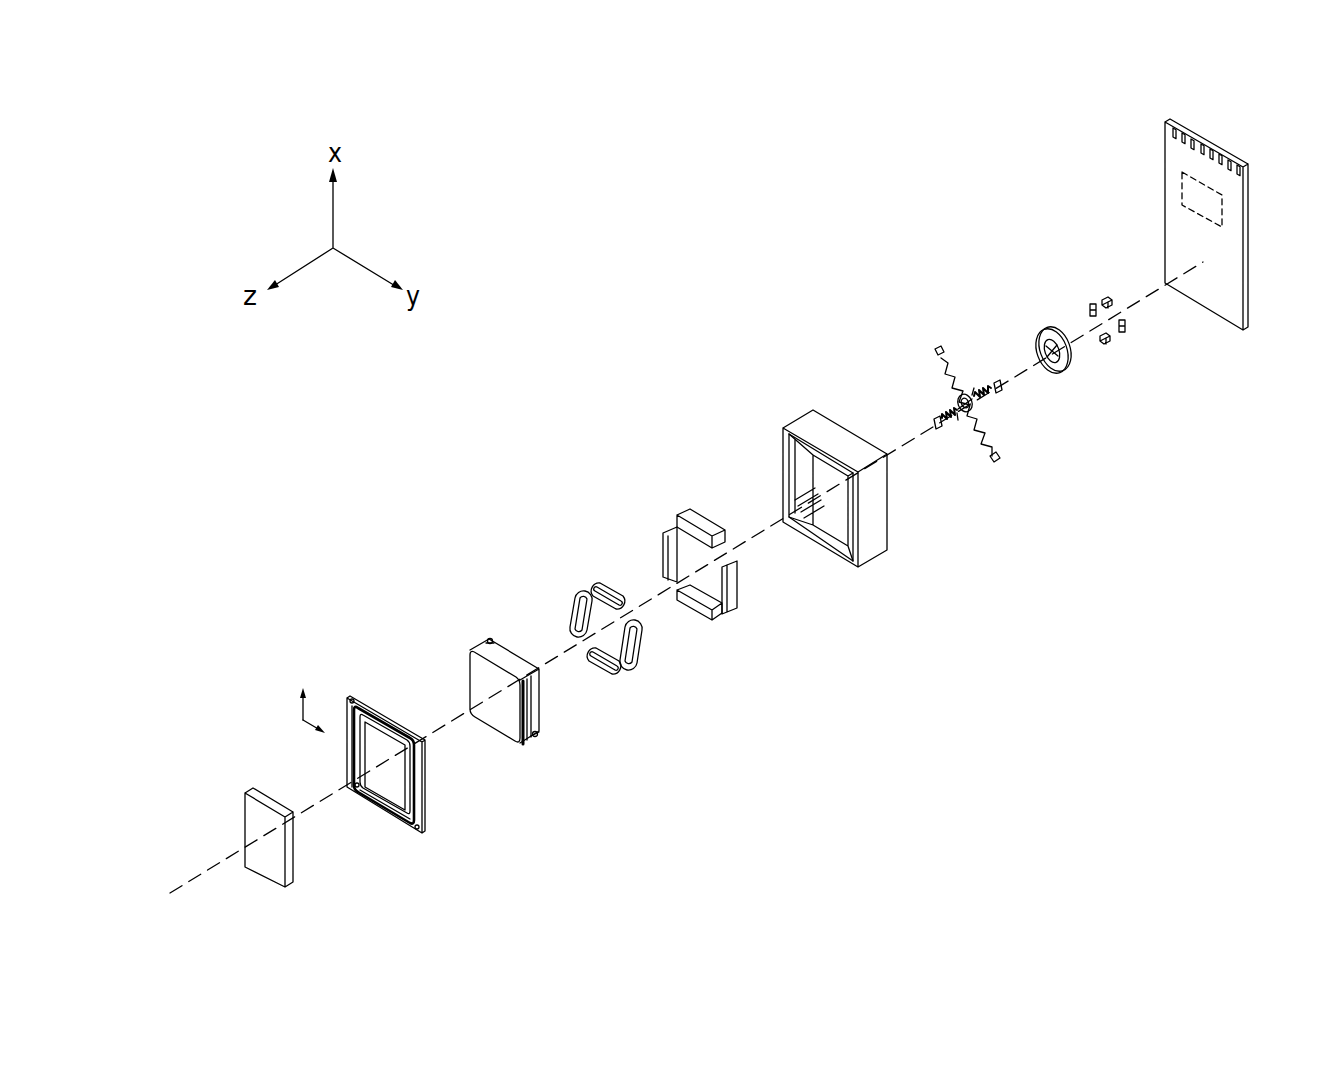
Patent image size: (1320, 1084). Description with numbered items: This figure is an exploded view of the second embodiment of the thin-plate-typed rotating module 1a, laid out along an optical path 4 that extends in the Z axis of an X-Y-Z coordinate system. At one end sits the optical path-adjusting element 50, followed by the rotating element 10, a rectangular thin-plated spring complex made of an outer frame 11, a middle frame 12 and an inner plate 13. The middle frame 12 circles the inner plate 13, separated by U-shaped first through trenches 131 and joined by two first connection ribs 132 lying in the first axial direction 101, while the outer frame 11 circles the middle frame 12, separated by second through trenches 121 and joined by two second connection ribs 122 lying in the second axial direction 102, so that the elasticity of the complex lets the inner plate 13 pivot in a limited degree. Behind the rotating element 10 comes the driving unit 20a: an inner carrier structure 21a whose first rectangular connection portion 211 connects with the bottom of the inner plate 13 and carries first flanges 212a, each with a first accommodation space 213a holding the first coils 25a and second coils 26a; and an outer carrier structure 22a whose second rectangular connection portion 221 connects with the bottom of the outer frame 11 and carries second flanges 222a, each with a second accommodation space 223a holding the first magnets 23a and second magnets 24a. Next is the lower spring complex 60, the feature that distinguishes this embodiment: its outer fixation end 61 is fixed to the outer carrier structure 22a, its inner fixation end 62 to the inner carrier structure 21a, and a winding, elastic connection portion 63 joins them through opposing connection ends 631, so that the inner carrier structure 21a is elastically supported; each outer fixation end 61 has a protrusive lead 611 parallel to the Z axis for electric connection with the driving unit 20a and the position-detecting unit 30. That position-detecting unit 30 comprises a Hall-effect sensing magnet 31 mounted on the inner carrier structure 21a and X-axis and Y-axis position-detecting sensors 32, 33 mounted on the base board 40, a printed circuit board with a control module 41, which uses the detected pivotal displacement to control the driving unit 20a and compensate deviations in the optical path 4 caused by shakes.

The thin-plate-typed rotating module 1a is at (512, 370).
The optical path 4 is at (210, 875).
The rotating element 10 is at (333, 692).
The outer frame 11 is at (422, 826).
The middle frame 12 is at (408, 825).
The inner plate 13 is at (385, 763).
The second through trench 121 is at (363, 708).
The second connection rib 122 is at (353, 745).
The first through trench 131 is at (397, 733).
The first connection rib 132 is at (375, 805).
The first axial direction 101 is at (303, 708).
The second axial direction 102 is at (303, 726).
The driving unit 20a is at (383, 580).
The inner carrier structure 21a is at (470, 648).
The first rectangular connection portion 211 is at (495, 720).
The first flange 212a is at (490, 638).
The first accommodation space 213a is at (540, 672).
The outer carrier structure 22a is at (786, 430).
The second rectangular connection portion 221 is at (797, 530).
The second flange 222a is at (818, 412).
The second accommodation space 223a is at (800, 473).
The first magnet 23a is at (672, 548).
The second magnet 24a is at (695, 528).
The first coil 25a is at (570, 597).
The second coil 26a is at (598, 585).
The position-detecting unit 30 is at (993, 268).
The Hall-effect sensing magnet 31 is at (1040, 337).
The X-axis position-detecting sensor 32 is at (1092, 305).
The Y-axis position-detecting sensor 33 is at (1110, 300).
The base board 40 is at (1168, 152).
The control module 41 is at (1182, 200).
The optical path-adjusting element 50 is at (245, 792).
The lower spring complex 60 is at (880, 412).
The outer fixation end 61 is at (928, 345).
The inner fixation end 62 is at (946, 401).
The connection portion 63 is at (928, 373).
The protrusive lead 611 is at (938, 348).
The connection end 631 is at (945, 362).